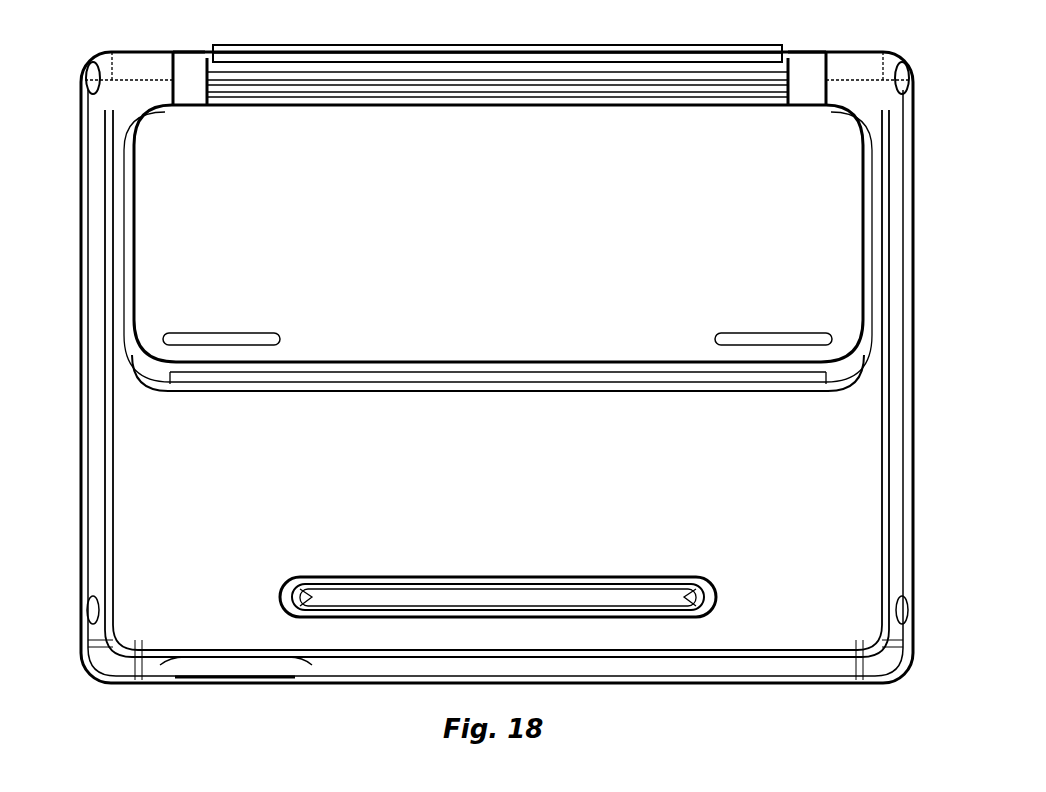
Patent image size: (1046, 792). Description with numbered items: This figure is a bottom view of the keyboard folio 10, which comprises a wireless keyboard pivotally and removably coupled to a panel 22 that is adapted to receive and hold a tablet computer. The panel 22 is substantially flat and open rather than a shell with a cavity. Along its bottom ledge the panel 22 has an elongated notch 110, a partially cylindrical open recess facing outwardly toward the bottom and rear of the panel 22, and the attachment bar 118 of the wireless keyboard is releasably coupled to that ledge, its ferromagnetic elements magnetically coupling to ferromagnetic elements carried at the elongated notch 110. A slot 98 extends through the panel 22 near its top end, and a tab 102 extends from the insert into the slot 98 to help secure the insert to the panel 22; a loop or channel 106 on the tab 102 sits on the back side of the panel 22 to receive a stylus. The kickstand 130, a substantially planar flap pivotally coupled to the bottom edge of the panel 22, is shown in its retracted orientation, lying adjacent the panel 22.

The keyboard folio 10 is at (668, 687).
The panel 22 is at (152, 458).
The slot 98 is at (711, 608).
The tab 102 is at (678, 600).
The channel 106 is at (384, 618).
The elongated notch 110 is at (206, 55).
The attachment bar 118 is at (713, 62).
The kickstand 130 is at (828, 207).